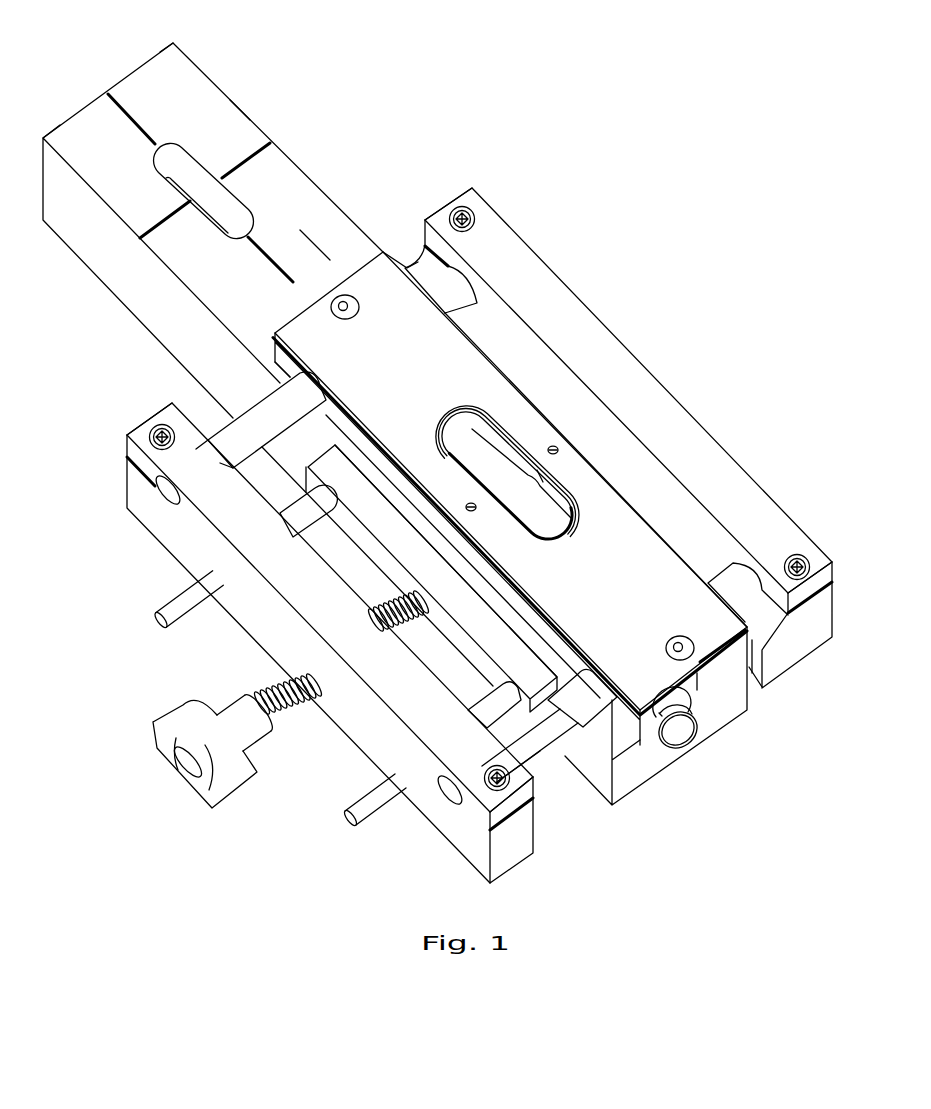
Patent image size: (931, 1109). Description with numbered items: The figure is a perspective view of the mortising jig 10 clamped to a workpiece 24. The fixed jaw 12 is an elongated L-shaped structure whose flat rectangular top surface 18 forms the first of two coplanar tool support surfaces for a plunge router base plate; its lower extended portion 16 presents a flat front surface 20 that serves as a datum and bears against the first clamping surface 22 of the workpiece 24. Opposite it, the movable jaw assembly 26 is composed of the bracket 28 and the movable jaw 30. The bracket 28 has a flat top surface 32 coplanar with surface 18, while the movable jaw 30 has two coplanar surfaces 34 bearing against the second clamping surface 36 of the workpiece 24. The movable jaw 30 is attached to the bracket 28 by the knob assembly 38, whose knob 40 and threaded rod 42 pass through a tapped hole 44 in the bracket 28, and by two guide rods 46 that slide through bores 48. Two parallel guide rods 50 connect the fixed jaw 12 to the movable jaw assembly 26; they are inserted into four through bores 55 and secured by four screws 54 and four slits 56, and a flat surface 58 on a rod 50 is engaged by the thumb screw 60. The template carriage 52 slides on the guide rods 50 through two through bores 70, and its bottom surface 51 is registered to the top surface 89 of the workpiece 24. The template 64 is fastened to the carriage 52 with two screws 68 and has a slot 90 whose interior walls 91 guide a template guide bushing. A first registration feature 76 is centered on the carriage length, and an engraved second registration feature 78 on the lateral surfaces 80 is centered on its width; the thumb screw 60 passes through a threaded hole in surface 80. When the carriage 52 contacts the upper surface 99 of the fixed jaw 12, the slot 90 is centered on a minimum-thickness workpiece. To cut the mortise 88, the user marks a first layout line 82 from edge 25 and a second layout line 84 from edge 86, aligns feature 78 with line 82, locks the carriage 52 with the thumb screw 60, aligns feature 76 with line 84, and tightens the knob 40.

The jig 10 is at (601, 321).
The fixed jaw 12 is at (472, 188).
The lower extended portion of the fixed jaw 16 is at (762, 652).
The top surface of the fixed jaw 18 is at (634, 394).
The front surface of the fixed jaw 20 is at (750, 668).
The first clamping surface of the workpiece 22 is at (748, 693).
The workpiece 24 is at (173, 43).
The edge of the workpiece 25 is at (237, 105).
The movable jaw assembly 26 is at (127, 436).
The bracket 28 is at (126, 506).
The movable jaw 30 is at (306, 492).
The top surface of the bracket 32 is at (331, 589).
The coplanar surfaces of the movable jaw 34 is at (407, 520).
The second workpiece clamping surface 36 is at (159, 282).
The knob assembly 38 is at (153, 732).
The knob 40 is at (205, 803).
The threaded rod 42 is at (280, 686).
The tapped hole 44 is at (318, 685).
The guide rods 46 is at (153, 621).
The bores 48 is at (217, 592).
The guide rods 50 is at (242, 437).
The bottom surface of the template carriage 51 is at (277, 370).
The template carriage 52 is at (640, 741).
The screws 54 is at (476, 219).
The through bores 55 is at (475, 295).
The slits 56 is at (426, 220).
The flat surface 58 is at (563, 733).
The thumb screw 60 is at (684, 738).
The template 64 is at (383, 250).
The screws 68 is at (359, 308).
The through bores 70 is at (326, 399).
The first registration feature 76 is at (543, 489).
The second registration feature 78 is at (698, 686).
The lateral surfaces of the template carriage 80 is at (737, 653).
The first layout line 82 is at (138, 111).
The second layout line 84 is at (160, 227).
The edge of the workpiece 86 is at (85, 107).
The mortise 88 is at (253, 218).
The top surface of the workpiece 89 is at (338, 262).
The slot 90 is at (460, 421).
The interior walls of the slot 91 is at (514, 424).
The upper surface of the fixed jaw 99 is at (684, 511).